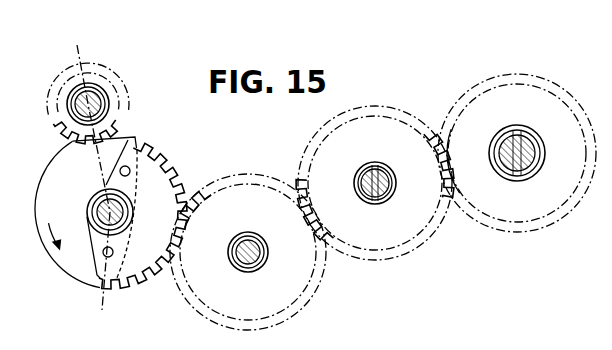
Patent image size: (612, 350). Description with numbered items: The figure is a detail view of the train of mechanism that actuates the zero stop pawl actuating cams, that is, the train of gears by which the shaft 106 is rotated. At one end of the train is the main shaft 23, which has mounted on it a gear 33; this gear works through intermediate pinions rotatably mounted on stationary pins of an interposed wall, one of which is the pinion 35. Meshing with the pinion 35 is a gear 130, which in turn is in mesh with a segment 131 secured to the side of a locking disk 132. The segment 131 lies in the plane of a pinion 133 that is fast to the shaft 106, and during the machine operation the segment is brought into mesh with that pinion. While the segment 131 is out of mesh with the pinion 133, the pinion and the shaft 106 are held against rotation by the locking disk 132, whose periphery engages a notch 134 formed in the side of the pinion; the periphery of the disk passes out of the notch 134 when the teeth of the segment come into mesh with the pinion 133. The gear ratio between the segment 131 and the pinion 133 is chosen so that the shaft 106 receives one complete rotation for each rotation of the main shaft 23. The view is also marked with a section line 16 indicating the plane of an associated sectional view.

The section line 16- 16 is at (92, 37).
The shaft 23 is at (525, 160).
The gear 33 is at (451, 120).
The intermediate pinion 35 is at (325, 124).
The shaft 106 is at (96, 101).
The gear 130 is at (260, 173).
The segment 131 is at (152, 147).
The locking disk 132 is at (45, 175).
The pinion 133 is at (117, 125).
The notch 134 is at (68, 143).